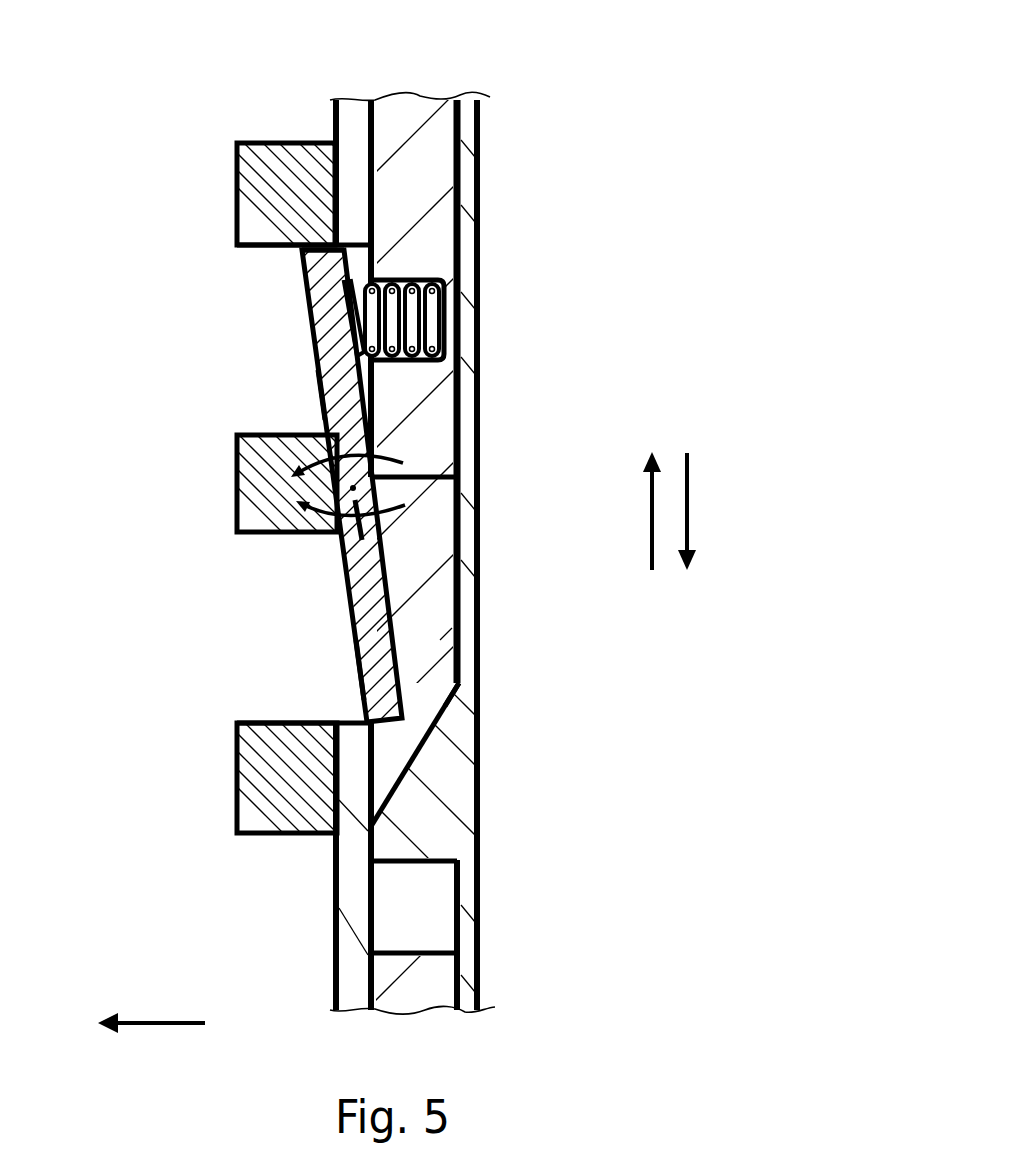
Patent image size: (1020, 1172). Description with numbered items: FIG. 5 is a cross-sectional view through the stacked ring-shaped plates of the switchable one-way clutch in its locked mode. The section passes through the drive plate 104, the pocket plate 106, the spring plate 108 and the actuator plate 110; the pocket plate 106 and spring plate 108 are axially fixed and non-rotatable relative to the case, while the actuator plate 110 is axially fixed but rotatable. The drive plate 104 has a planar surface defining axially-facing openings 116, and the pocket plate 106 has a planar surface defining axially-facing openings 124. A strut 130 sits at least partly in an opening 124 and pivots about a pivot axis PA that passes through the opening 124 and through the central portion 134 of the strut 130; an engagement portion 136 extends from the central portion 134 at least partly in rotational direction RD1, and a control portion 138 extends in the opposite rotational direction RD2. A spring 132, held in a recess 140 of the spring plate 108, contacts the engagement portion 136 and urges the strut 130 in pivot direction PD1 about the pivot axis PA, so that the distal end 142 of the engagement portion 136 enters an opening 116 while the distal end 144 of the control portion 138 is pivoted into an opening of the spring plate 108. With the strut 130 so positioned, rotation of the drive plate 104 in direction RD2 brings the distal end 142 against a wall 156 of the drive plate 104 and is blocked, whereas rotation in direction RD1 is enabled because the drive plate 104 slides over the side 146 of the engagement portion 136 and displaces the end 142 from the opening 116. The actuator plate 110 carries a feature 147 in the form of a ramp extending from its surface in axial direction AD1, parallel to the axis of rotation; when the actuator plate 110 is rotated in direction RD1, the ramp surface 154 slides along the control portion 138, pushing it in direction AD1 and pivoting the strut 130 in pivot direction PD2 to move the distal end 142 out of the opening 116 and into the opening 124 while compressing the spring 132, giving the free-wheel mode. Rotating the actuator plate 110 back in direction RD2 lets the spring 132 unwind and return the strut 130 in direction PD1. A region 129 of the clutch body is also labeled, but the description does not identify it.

The drive plate 104 is at (237, 207).
The pocket plate 106 is at (352, 98).
The spring plate 108 is at (416, 78).
The actuator plate 110 is at (474, 78).
The axially-facing openings 116 is at (240, 297).
The axially-facing openings 124 is at (378, 250).
The housing body portion 129 is at (445, 608).
The strut 130 is at (334, 590).
The spring 132 is at (425, 310).
The central portion 134 is at (360, 514).
The engagement portion 136 is at (300, 345).
The control portion 138 is at (347, 675).
The recess 140 is at (430, 364).
The distal end of engagement portion 142 is at (327, 237).
The distal end of control portion 144 is at (400, 727).
The side of engagement portion 146 is at (321, 394).
The ramp feature 147 is at (392, 796).
The ramp surface 154 is at (438, 695).
The wall 156 is at (302, 252).
The pivot axis PA is at (352, 488).
The first pivot direction PD1 is at (403, 463).
The second pivot direction PD2 is at (405, 507).
The first rotational direction RD1 is at (653, 558).
The second rotational direction RD2 is at (688, 490).
The axial direction AD1 is at (170, 1020).